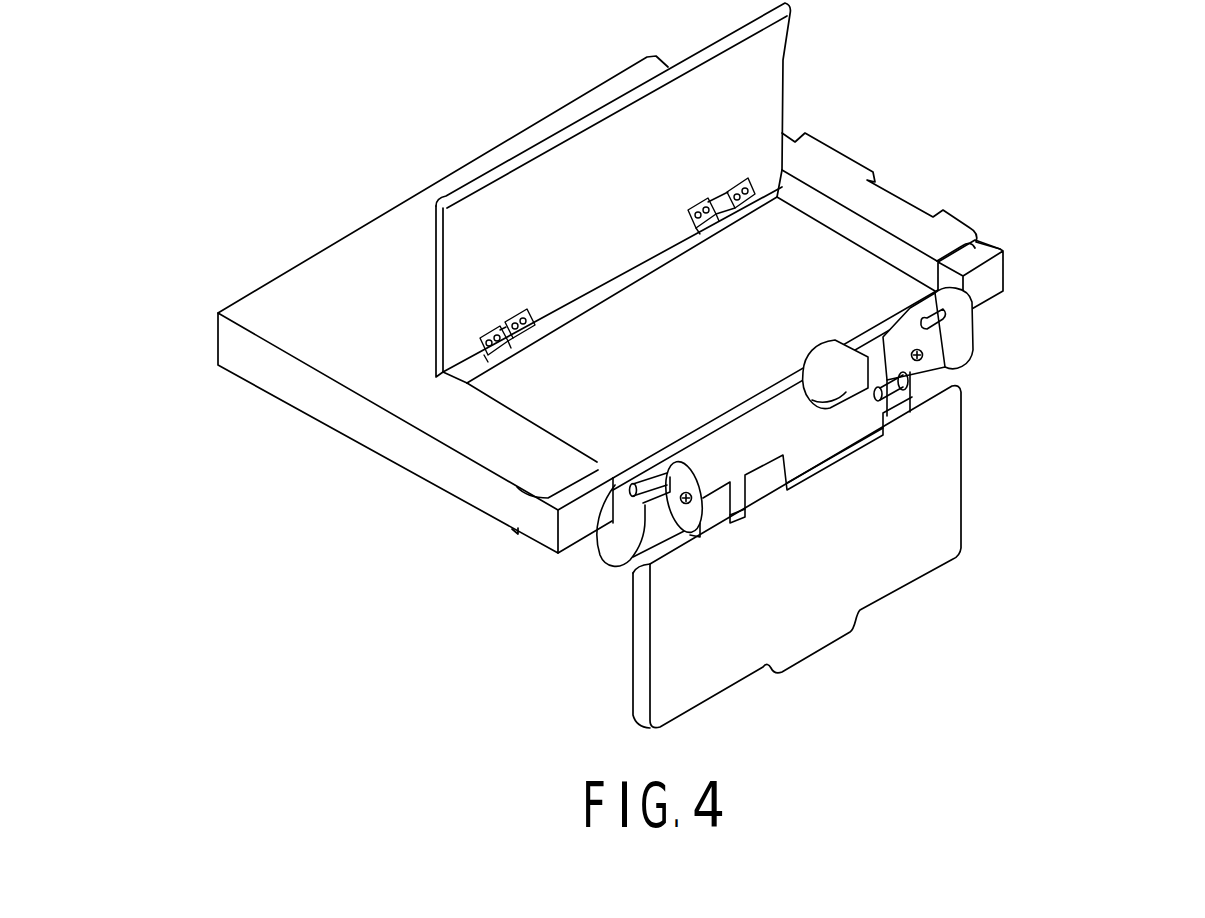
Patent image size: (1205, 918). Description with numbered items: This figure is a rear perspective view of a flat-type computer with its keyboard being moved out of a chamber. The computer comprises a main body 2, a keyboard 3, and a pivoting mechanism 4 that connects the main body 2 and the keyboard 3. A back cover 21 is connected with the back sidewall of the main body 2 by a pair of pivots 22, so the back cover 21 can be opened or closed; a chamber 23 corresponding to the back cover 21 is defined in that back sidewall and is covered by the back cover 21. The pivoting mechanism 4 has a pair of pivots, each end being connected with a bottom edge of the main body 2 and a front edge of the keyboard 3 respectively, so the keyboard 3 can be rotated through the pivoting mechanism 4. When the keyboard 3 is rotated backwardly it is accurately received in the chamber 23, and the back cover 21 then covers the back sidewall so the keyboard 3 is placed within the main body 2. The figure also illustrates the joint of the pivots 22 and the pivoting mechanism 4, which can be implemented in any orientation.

The main body 2 is at (305, 247).
The back cover 21 is at (588, 118).
The pivots 22 is at (483, 347).
The chamber 23 is at (800, 240).
The keyboard 3 is at (965, 505).
The pivoting mechanism 4 is at (977, 355).